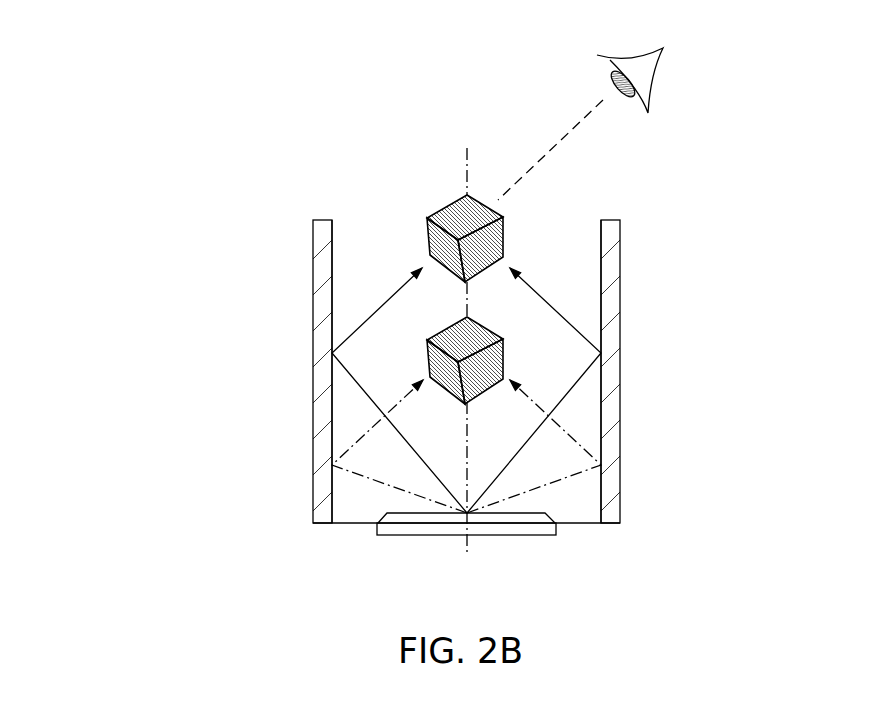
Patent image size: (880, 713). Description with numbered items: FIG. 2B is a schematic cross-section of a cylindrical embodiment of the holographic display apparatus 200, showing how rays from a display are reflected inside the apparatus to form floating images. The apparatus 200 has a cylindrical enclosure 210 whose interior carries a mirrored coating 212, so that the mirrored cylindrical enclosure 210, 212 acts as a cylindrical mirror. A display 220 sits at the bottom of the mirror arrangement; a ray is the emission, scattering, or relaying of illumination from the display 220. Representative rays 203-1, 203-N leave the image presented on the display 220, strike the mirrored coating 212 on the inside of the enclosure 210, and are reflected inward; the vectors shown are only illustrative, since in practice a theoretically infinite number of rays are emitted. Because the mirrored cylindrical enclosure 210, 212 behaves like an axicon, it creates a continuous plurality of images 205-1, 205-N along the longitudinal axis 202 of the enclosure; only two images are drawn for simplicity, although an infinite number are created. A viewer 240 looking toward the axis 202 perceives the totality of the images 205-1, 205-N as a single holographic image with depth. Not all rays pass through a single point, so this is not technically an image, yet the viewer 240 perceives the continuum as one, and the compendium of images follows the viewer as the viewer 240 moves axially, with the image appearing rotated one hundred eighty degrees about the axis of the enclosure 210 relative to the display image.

The holographic display apparatus 200 is at (147, 77).
The longitudinal axis 202 is at (468, 368).
The first ray 203-1 is at (358, 322).
The Nth ray 203-N is at (572, 422).
The first image 205-1 is at (477, 195).
The Nth image 205-N is at (427, 357).
The cylindrical enclosure 210 is at (310, 368).
The mirrored coating 212 is at (367, 183).
The display 220 is at (398, 515).
The viewer 240 is at (668, 42).